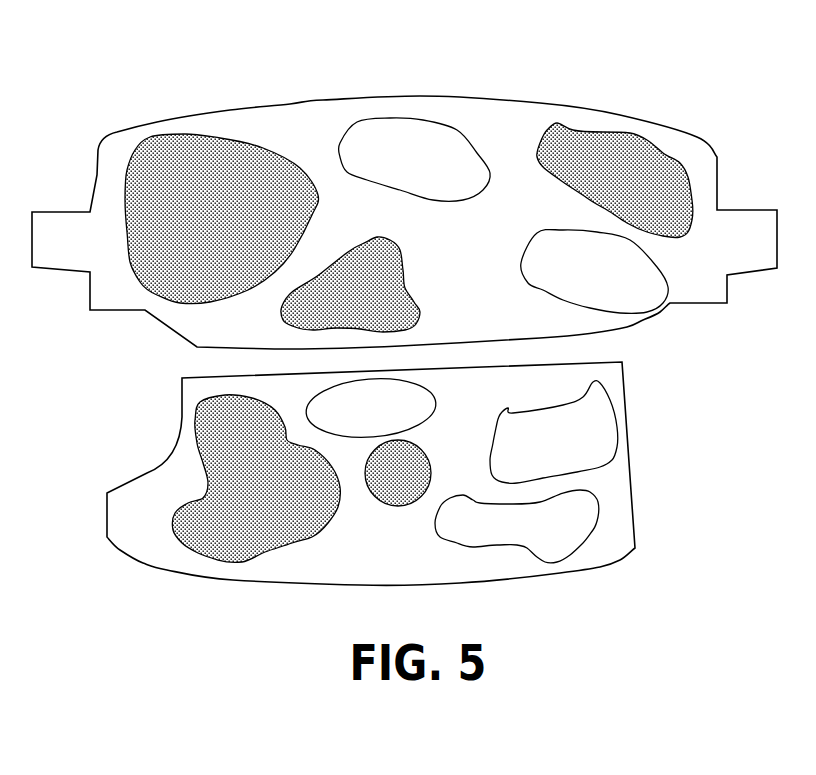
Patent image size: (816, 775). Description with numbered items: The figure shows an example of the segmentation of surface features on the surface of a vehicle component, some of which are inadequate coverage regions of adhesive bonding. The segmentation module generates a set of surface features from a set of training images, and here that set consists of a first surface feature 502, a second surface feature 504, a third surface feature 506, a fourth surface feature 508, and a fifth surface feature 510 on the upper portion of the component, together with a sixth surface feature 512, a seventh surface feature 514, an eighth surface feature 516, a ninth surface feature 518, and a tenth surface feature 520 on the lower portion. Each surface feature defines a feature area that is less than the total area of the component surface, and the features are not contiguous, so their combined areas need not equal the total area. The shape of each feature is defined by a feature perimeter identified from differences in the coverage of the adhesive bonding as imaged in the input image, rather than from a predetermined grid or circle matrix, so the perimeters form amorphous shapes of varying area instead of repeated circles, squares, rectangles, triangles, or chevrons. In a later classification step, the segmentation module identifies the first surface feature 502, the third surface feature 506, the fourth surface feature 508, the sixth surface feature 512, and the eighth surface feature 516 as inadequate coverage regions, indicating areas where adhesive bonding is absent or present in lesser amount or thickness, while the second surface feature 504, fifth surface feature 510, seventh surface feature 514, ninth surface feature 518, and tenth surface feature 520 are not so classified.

The first surface feature 502 is at (202, 232).
The second surface feature 504 is at (393, 172).
The third surface feature 506 is at (328, 296).
The fourth surface feature 508 is at (595, 192).
The fifth surface feature 510 is at (573, 286).
The sixth surface feature 512 is at (235, 491).
The seventh surface feature 514 is at (352, 419).
The eighth surface feature 516 is at (378, 486).
The ninth surface feature 518 is at (535, 444).
The tenth surface feature 520 is at (497, 537).